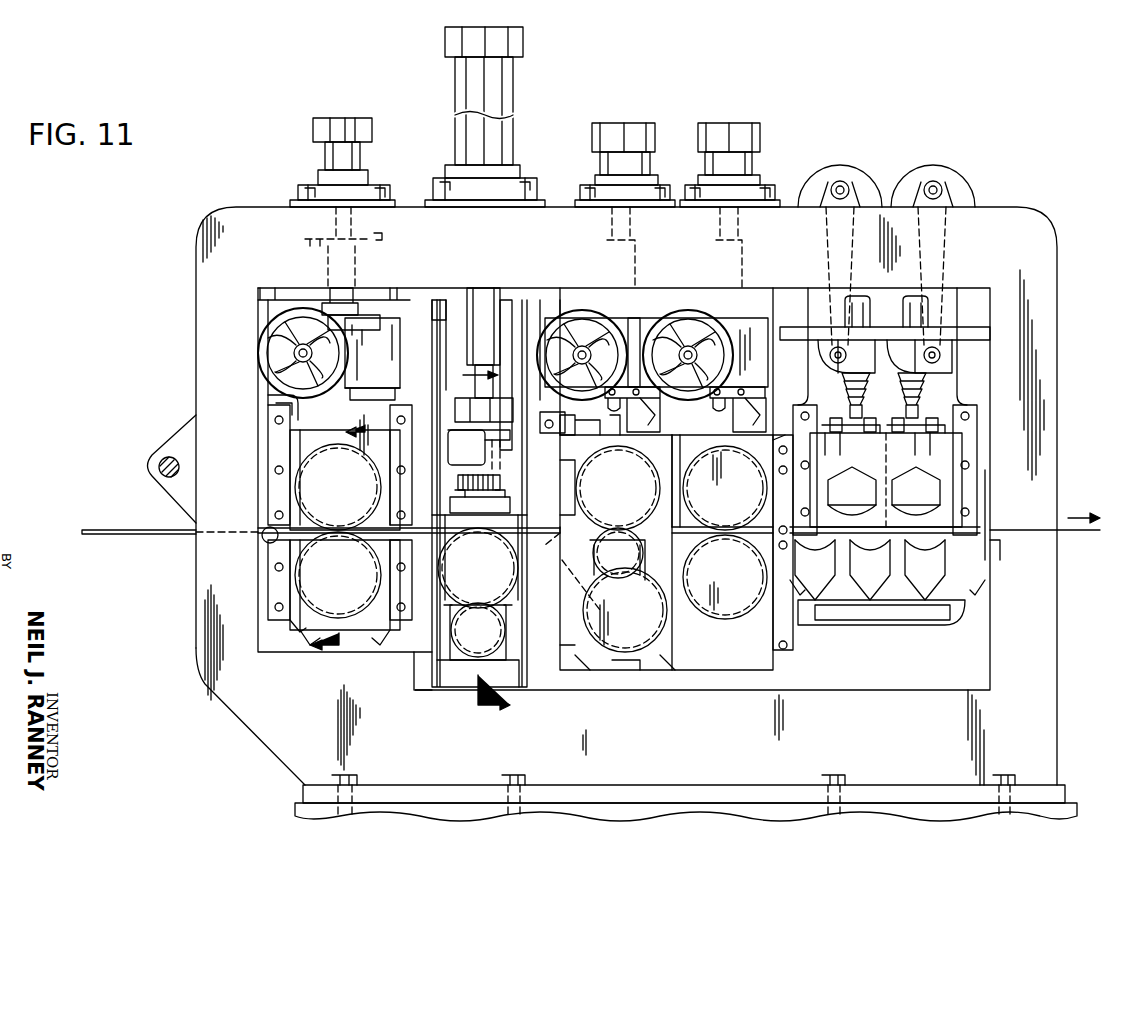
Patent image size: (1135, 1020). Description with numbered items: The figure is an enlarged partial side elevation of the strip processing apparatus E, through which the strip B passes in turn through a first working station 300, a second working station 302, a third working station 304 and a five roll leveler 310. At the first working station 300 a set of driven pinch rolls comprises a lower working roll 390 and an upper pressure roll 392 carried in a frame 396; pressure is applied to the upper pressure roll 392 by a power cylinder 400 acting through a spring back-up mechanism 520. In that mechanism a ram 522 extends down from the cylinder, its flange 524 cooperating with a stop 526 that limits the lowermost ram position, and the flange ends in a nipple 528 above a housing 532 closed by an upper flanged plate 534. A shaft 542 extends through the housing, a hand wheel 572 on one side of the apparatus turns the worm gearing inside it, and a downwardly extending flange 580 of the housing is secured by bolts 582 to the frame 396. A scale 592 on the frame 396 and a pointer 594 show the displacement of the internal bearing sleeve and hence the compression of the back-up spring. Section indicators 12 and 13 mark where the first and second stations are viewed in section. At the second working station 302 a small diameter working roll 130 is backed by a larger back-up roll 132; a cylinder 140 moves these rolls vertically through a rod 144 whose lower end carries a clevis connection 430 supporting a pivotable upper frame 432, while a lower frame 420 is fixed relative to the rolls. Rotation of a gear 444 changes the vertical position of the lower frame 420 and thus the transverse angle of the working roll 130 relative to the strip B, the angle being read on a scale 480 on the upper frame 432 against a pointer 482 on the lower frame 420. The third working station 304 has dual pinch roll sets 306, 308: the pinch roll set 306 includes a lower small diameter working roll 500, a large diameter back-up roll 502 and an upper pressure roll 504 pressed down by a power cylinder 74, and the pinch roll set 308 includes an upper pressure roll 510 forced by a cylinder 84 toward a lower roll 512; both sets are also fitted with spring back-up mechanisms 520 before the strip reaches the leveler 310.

The apparatus E is at (1040, 178).
The strip B is at (141, 538).
The first working station 300 is at (277, 165).
The second working station 302 is at (527, 165).
The third working station 304 is at (682, 138).
The five roll leveler 310 is at (897, 170).
The power cylinder 400 is at (338, 128).
The cylinder 140 is at (510, 80).
The power cylinder 74 is at (627, 130).
The cylinder 84 is at (752, 128).
The ram 522 is at (335, 216).
The flange 524 is at (363, 236).
The stop 526 is at (384, 236).
The shaft 542 is at (323, 306).
The nipple 528 is at (330, 312).
The spring back-up mechanism 520 is at (348, 325).
The upper flanged plate 534 is at (372, 345).
The pointer 594 is at (505, 300).
The rod 144 is at (492, 330).
The clevis connection 430 is at (560, 310).
The upper frame 432 is at (663, 381).
The hand wheel 572 is at (265, 330).
The housing 532 is at (445, 320).
The bolts 582 is at (268, 395).
The flange 580 is at (290, 432).
The frame 396 is at (292, 450).
The scale 592 is at (365, 440).
The pointer 482 is at (470, 465).
The upper pressure roll 392 is at (340, 514).
The lower working roll 390 is at (338, 532).
The scale 480 is at (462, 515).
The working roll 130 is at (468, 655).
The back-up roll 132 is at (420, 658).
The section line 12- 12 is at (331, 555).
The section line 13- 13 is at (474, 546).
The gear 444 is at (658, 476).
The lower frame 420 is at (560, 508).
The upper pressure roll 504 is at (660, 462).
The upper pressure roll 510 is at (726, 555).
The lower roll 512 is at (725, 577).
The lower working roll 500 is at (605, 632).
The pinch roll set 308 is at (728, 600).
The pinch roll set 306 is at (620, 660).
The back-up roll 502 is at (640, 668).